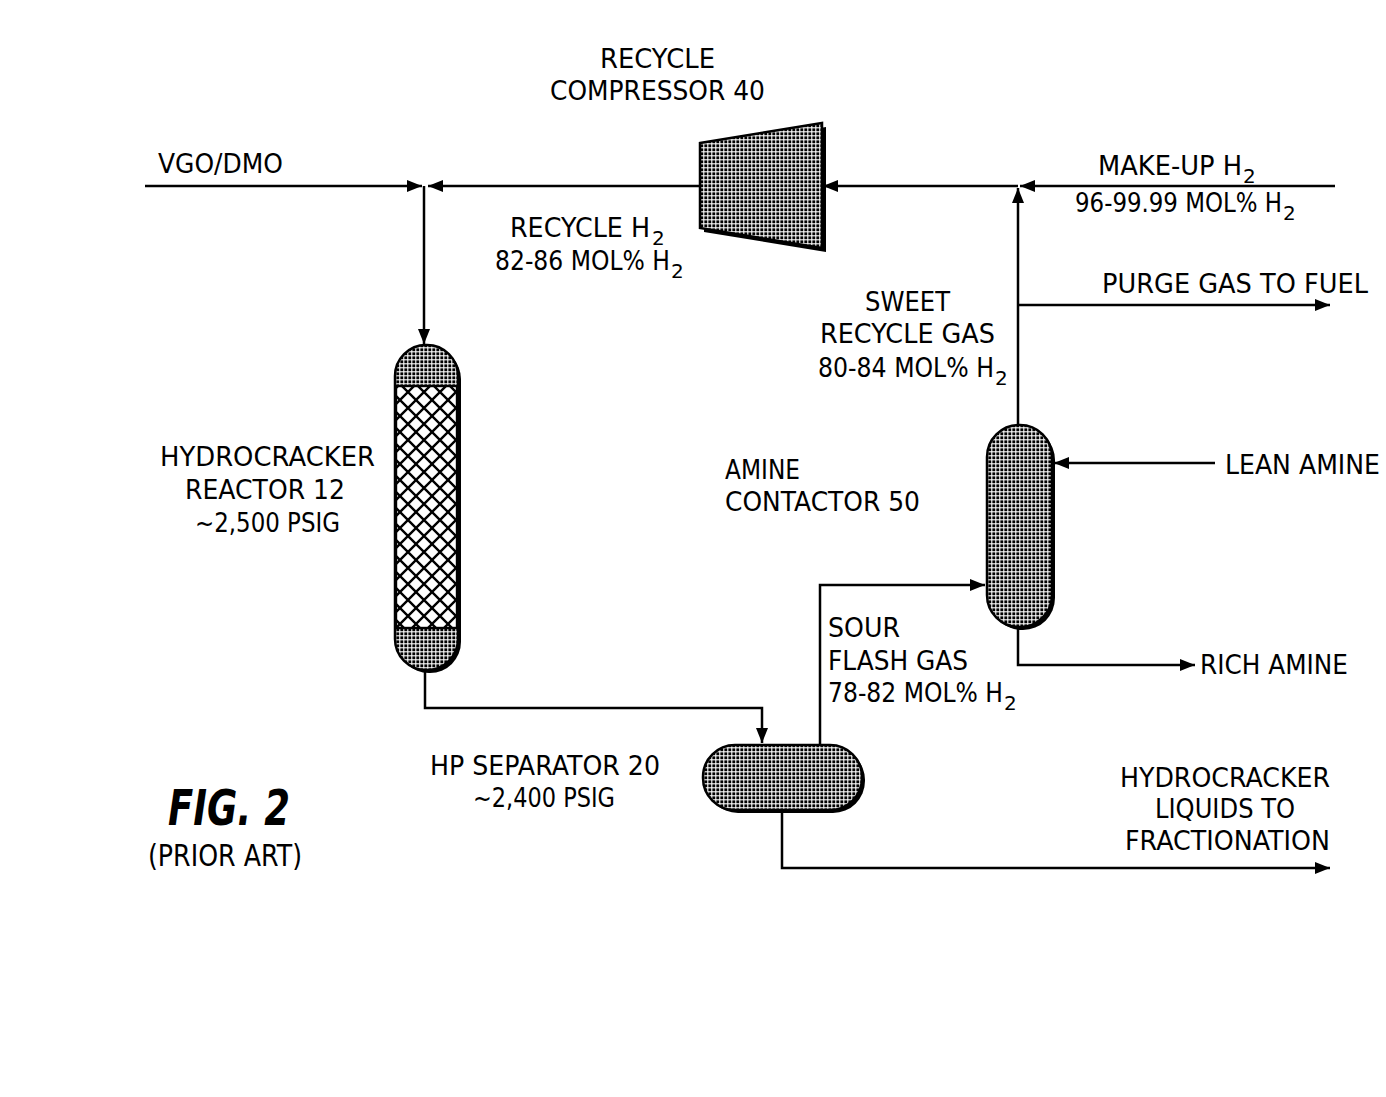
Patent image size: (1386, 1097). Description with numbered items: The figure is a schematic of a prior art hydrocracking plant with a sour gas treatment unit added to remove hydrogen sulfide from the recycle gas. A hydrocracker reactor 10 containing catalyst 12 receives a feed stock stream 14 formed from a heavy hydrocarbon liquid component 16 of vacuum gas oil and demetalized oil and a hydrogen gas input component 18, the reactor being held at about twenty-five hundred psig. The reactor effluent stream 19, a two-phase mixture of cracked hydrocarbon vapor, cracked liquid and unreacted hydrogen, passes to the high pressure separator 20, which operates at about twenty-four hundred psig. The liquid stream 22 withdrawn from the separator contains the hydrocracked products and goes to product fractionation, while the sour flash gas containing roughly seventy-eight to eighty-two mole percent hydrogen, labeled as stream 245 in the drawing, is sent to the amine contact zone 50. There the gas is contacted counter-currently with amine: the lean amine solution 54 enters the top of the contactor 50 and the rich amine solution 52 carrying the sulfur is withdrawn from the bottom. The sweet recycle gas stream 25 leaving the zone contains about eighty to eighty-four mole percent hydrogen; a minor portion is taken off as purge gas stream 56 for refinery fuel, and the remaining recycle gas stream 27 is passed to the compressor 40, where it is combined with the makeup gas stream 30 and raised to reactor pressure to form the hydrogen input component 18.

The hydrocracker reactor 10 is at (345, 375).
The catalyst 12 is at (395, 503).
The feed stock stream 14 is at (424, 255).
The heavy hydrocarbon liquid component 16 is at (237, 188).
The hydrogen gas input component 18 is at (522, 185).
The reactor effluent stream 19 is at (427, 690).
The high pressure separator 20 is at (703, 775).
The liquid stream 22 is at (1053, 868).
The sweet recycle gas stream 25 is at (1018, 393).
The remaining recycle gas stream 27 is at (1018, 245).
The makeup gas stream 30 is at (1290, 184).
The compressor 40 is at (797, 124).
The amine contact zone 50 is at (987, 503).
The rich amine solution 52 is at (1095, 665).
The lean amine solution 54 is at (1112, 463).
The purge gas stream 56 is at (1172, 305).
The sour flash gas line 245 is at (820, 645).